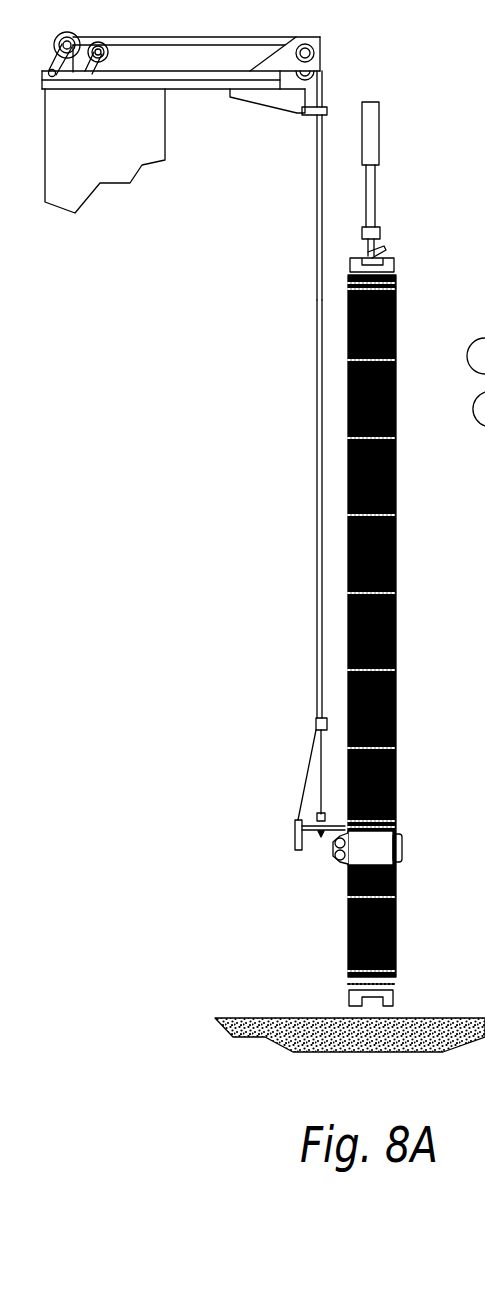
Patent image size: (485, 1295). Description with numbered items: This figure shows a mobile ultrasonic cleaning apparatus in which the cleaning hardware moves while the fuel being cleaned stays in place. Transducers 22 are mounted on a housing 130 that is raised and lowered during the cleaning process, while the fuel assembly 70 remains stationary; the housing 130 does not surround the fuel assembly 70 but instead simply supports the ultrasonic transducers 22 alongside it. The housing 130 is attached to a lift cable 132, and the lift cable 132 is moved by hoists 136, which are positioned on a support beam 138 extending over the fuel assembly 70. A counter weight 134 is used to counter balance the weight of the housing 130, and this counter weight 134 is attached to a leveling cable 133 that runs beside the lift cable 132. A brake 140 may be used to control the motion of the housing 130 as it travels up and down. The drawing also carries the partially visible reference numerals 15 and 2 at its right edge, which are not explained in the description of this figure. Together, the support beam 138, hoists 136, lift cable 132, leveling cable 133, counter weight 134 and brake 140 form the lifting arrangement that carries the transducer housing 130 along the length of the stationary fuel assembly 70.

The support beam 138 is at (199, 85).
The hoists 136 is at (66, 77).
The brake 140 is at (327, 104).
The lift cable 132 is at (314, 204).
The leveling cable 133 is at (314, 390).
The counter weight 134 is at (293, 841).
The fuel assembly 70 is at (397, 405).
The housing 130 is at (401, 841).
The transducers 22 is at (340, 847).
The partial numeral 15 is at (477, 220).
The partial numeral 2 is at (476, 439).